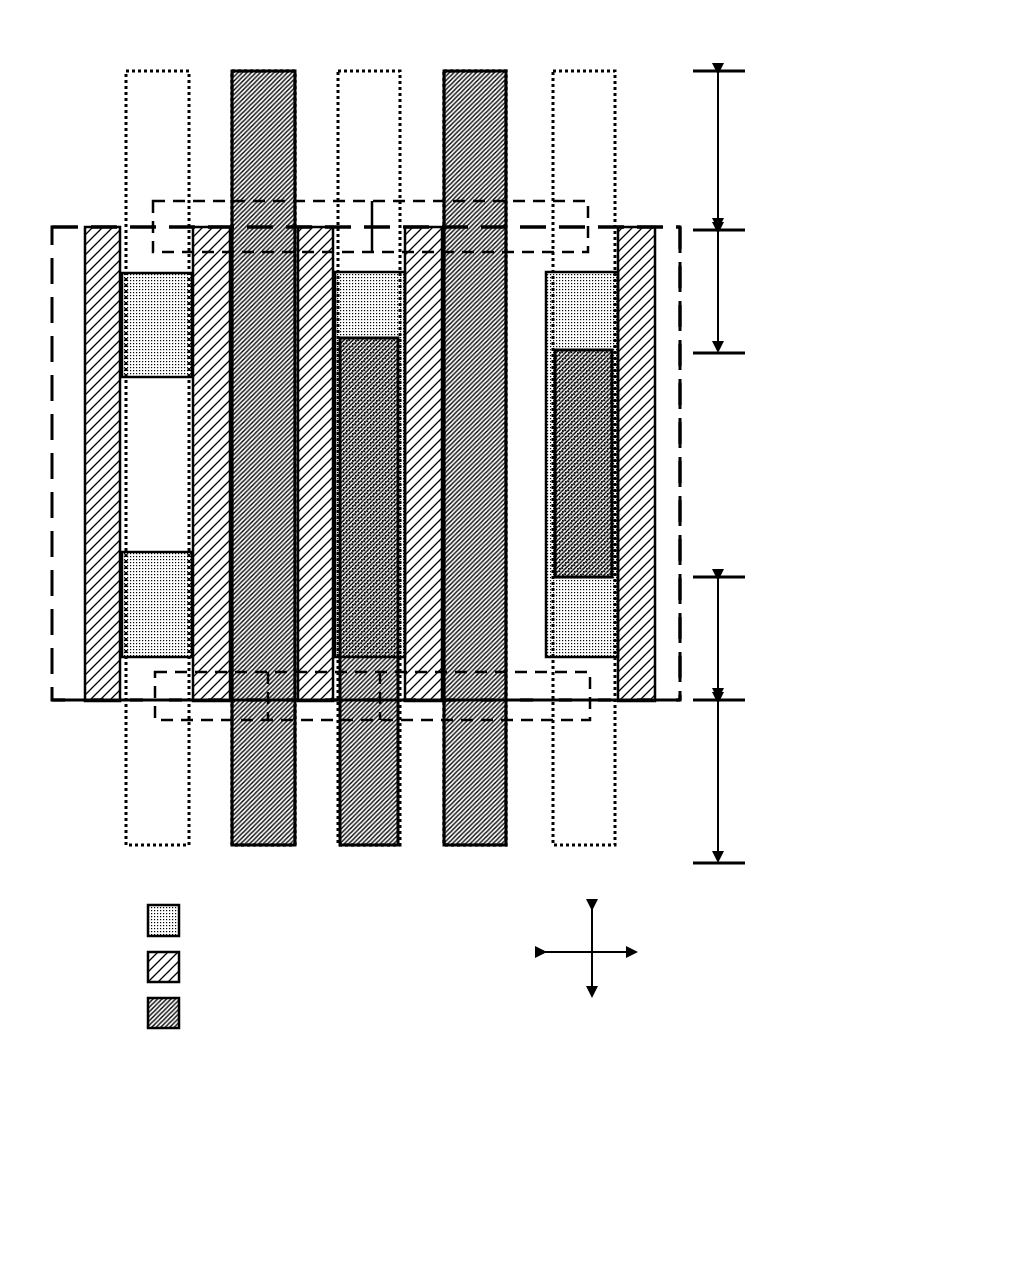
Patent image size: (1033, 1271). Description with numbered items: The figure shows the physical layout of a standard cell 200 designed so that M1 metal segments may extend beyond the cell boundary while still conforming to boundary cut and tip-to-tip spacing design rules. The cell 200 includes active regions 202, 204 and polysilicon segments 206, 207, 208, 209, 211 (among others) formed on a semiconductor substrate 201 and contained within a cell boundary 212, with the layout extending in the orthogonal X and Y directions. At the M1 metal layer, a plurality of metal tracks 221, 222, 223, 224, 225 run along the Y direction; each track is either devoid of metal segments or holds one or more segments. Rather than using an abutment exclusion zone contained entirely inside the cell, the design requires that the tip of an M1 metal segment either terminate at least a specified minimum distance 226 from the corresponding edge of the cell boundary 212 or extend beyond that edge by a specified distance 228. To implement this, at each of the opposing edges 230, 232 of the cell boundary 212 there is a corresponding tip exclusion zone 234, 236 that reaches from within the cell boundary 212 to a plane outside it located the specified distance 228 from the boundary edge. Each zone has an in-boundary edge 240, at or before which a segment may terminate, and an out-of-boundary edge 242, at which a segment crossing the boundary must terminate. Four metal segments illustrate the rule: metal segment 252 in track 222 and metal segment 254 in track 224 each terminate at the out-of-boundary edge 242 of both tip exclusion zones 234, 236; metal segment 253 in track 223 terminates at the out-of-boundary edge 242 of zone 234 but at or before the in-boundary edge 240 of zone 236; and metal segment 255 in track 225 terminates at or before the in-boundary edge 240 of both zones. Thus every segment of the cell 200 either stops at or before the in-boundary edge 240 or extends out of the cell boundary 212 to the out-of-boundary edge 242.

The cell 200 is at (653, 40).
The semiconductor substrate 201 is at (670, 525).
The active region 202 is at (160, 378).
The active region 204 is at (162, 560).
The polysilicon segment 206 is at (110, 236).
The polysilicon segment 207 is at (208, 236).
The polysilicon segment 208 is at (319, 236).
The polysilicon segment 209 is at (451, 568).
The polysilicon segment 211 is at (638, 236).
The cell boundary 212 is at (683, 455).
The metal track 221 is at (157, 68).
The metal track 222 is at (270, 68).
The metal track 223 is at (370, 68).
The metal track 224 is at (480, 68).
The metal track 225 is at (585, 68).
The specified minimum distance 226 is at (720, 314).
The specified distance 228 is at (720, 130).
The edge of the cell boundary 230 is at (68, 704).
The edge of the cell boundary 232 is at (64, 225).
The tip exclusion zone 234 is at (503, 707).
The tip exclusion zone 236 is at (502, 230).
The in-boundary edge 240 is at (745, 353).
The out-of-boundary edge 242 is at (745, 71).
The metal segment 252 is at (260, 85).
The metal segment 253 is at (372, 846).
The metal segment 254 is at (467, 84).
The metal segment 255 is at (585, 420).